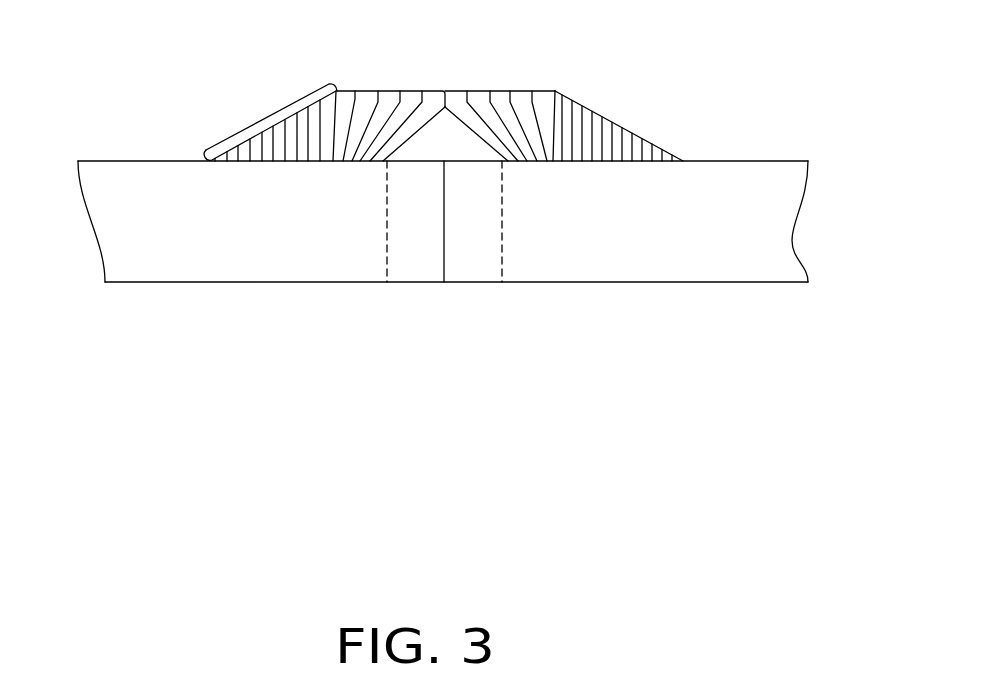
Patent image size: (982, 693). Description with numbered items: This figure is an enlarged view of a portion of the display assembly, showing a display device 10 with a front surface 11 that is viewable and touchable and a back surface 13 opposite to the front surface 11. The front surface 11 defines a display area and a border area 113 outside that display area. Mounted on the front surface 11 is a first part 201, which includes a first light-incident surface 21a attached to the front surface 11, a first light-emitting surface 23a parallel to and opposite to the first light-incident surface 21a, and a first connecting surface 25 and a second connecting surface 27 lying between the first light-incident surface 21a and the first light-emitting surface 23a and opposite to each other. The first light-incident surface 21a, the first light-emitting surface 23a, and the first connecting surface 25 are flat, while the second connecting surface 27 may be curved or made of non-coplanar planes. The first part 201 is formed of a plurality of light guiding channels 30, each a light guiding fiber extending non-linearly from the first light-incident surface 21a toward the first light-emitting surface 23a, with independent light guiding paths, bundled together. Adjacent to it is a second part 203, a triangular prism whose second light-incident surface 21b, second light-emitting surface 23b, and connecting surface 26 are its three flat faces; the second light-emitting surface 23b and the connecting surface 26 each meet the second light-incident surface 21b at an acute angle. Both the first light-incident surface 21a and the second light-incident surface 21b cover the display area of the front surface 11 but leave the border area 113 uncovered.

The display device 10 is at (113, 185).
The front surface 11 is at (716, 160).
The back surface 13 is at (706, 284).
The border area 113 is at (465, 258).
The first part 201 is at (275, 110).
The second part 203 is at (445, 88).
The second connecting surface 27 is at (474, 135).
The first light-emitting surface 23a is at (503, 89).
The second light-emitting surface 23b is at (624, 126).
The first light-incident surface 21a is at (518, 164).
The second light-incident surface 21b is at (610, 164).
The first connecting surface 25 is at (553, 116).
The connecting surface 26 is at (602, 93).
The light guiding channel 30 is at (590, 118).